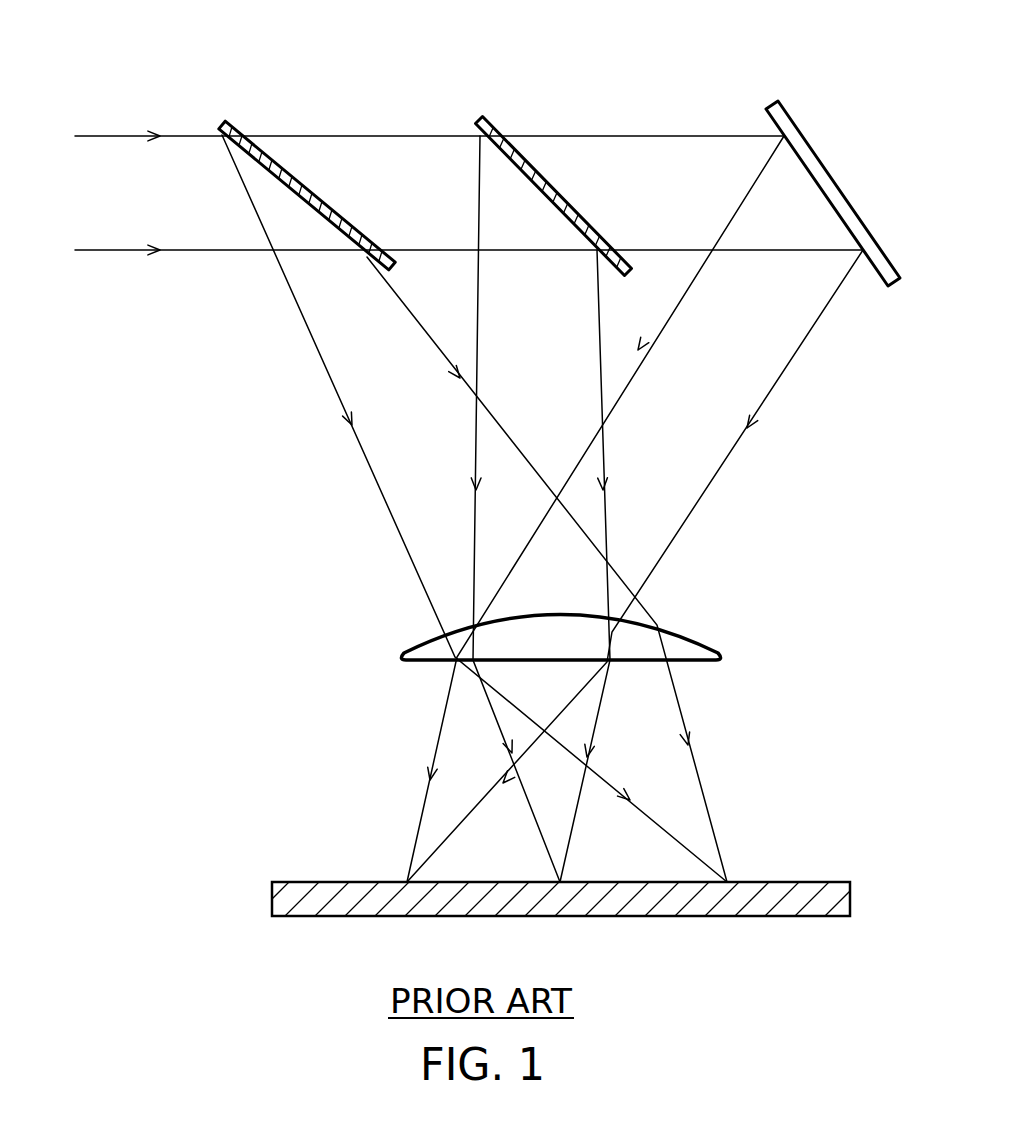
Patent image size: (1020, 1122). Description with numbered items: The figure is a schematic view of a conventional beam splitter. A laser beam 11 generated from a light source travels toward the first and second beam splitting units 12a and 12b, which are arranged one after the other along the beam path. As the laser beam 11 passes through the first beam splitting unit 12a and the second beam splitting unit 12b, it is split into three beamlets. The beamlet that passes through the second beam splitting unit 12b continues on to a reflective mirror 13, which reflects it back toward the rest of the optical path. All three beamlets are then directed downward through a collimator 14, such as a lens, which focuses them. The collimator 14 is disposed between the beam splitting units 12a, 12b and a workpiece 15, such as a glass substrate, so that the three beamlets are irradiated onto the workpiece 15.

The laser beam 11 is at (143, 225).
The first beam splitting unit 12a is at (234, 128).
The second beam splitting unit 12b is at (487, 128).
The reflective mirror 13 is at (786, 122).
The collimator 14 is at (697, 648).
The workpiece 15 is at (307, 888).